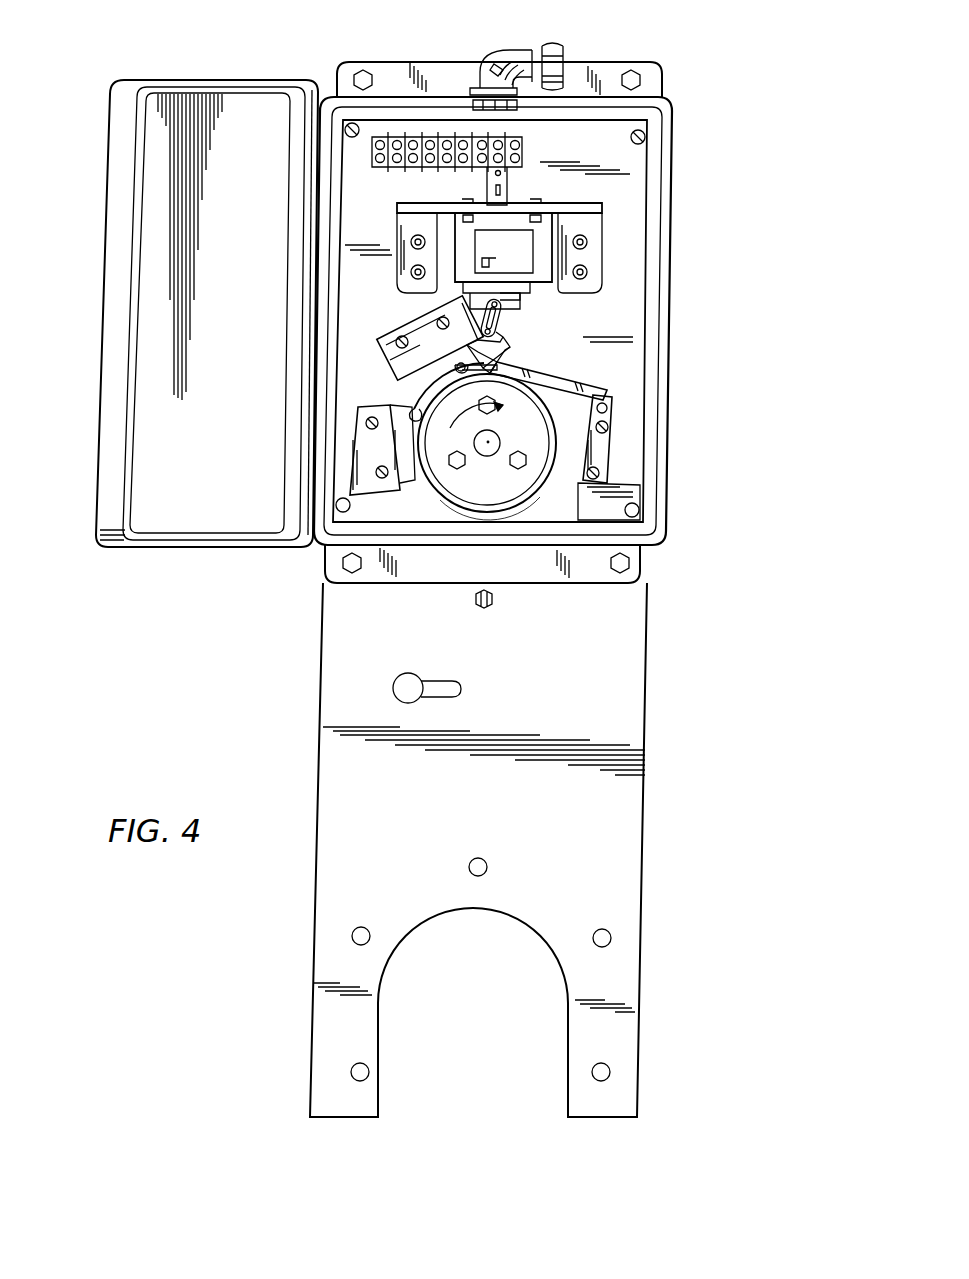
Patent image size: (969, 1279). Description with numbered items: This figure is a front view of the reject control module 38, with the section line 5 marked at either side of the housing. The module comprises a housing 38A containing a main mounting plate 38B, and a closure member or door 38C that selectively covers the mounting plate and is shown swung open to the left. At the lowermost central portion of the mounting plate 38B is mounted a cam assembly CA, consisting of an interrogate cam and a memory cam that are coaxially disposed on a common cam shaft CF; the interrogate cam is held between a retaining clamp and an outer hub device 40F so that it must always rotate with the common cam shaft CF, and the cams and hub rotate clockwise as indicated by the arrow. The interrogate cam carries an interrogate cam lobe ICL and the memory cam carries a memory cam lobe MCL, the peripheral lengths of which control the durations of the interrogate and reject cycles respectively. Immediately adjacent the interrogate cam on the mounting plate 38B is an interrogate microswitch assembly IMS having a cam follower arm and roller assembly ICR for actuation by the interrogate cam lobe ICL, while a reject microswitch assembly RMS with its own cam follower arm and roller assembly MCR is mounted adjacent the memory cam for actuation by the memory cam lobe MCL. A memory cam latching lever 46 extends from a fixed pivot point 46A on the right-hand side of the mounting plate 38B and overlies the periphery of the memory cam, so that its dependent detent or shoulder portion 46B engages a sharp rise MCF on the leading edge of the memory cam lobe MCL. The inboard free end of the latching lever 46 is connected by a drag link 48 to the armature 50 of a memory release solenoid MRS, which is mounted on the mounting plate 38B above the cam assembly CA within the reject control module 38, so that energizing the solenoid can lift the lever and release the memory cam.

The reject control module 38 is at (621, 27).
The housing 38A is at (676, 125).
The main mounting plate 38B is at (600, 155).
The closure member or door 38C is at (237, 103).
The memory release solenoid MRS is at (531, 252).
The reject microswitch assembly RMS is at (426, 334).
The interrogate microswitch assembly IMS is at (378, 448).
The armature 50 is at (520, 296).
The drag link 48 is at (503, 313).
The memory cam lobe MCL is at (498, 360).
The sharp rise on the memory cam lobe MCF is at (489, 368).
The cam follower arm and roller assembly MCR is at (425, 384).
The interrogate cam lobe ICL is at (433, 410).
The cam follower arm and roller assembly ICR is at (412, 407).
The memory cam latching lever 46 is at (561, 382).
The fixed pivot point 46A is at (634, 378).
The dependent detent or shoulder portion 46B is at (511, 356).
The outer hub device 40F is at (505, 432).
The common cam shaft CF is at (489, 445).
The cam assembly CA is at (464, 508).
The section line 5- 5 is at (102, 443).